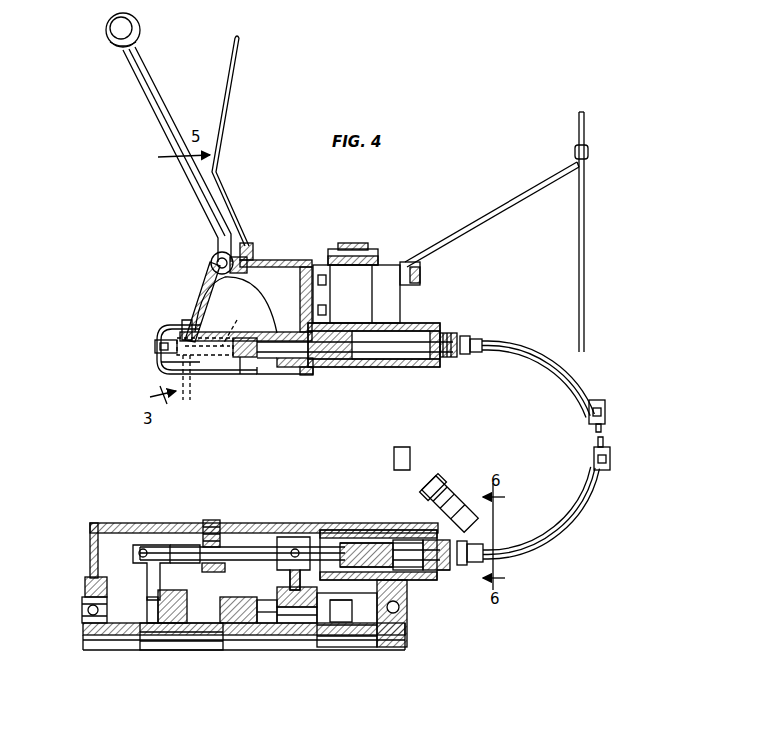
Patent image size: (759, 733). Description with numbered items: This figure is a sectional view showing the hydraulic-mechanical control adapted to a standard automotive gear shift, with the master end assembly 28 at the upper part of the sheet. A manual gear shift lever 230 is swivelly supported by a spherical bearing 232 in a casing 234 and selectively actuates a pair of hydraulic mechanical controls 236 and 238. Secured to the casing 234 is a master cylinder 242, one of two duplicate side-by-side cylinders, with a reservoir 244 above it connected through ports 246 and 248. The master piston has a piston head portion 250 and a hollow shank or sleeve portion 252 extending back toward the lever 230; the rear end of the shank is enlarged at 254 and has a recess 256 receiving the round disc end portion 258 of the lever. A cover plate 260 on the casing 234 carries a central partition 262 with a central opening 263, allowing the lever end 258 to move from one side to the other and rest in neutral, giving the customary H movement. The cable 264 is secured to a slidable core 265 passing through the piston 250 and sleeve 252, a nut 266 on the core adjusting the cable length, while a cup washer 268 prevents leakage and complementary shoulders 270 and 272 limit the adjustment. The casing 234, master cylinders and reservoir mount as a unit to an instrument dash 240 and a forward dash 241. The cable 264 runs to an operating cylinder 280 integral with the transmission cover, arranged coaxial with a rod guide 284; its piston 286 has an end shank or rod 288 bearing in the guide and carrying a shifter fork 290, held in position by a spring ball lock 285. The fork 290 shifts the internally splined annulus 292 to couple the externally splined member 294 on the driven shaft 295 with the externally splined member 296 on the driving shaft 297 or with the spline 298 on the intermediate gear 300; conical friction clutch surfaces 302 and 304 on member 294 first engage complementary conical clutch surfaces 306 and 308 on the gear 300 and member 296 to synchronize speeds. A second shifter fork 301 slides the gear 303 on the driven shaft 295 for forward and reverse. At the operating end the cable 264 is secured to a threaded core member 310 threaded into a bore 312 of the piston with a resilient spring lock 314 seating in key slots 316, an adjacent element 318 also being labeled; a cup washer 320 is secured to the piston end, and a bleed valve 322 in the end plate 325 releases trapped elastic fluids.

The master cylinder 28 is at (405, 335).
The manual gear shift lever 230 is at (170, 140).
The spherical bearing 232 is at (212, 256).
The casing 234 is at (270, 260).
The hydraulic mechanical control 236 is at (592, 386).
The hydraulic mechanical control 238 is at (608, 414).
The instrument dash 240 is at (230, 118).
The forward dash 241 is at (585, 120).
The master cylinder 242 is at (446, 360).
The reservoir 244 is at (390, 296).
The port 246 is at (356, 320).
The port 248 is at (326, 310).
The piston head portion 250 is at (310, 376).
The hollow shank or sleeve portion 252 is at (268, 376).
The enlarged rear end of shank 254 is at (186, 374).
The recess 256 is at (190, 400).
The round disc end portion 258 is at (183, 322).
The cover plate 260 is at (153, 346).
The central partition 262 is at (190, 292).
The central opening 263 is at (238, 324).
The cable 264 is at (412, 355).
The slidable core 265 is at (160, 332).
The nut 266 is at (160, 362).
The cup washer 268 is at (350, 360).
The shoulder 270 is at (246, 375).
The shoulder 272 is at (243, 358).
The operating cylinder 280 is at (352, 540).
The rod guide 284 is at (200, 540).
The spring ball lock 285 is at (208, 520).
The piston 286 is at (418, 542).
The end shank or rod 288 is at (248, 548).
The shifter fork 290 is at (286, 540).
The internally splined annulus 292 is at (312, 548).
The externally splined member 294 is at (296, 625).
The driven shaft 295 is at (215, 635).
The externally splined member 296 is at (340, 630).
The driving shaft 297 is at (395, 648).
The spline 298 is at (268, 625).
The intermediate gear 300 is at (233, 652).
The shifter fork 301 is at (145, 545).
The conical friction clutch surface 302 is at (270, 594).
The gear 303 is at (165, 622).
The conical friction clutch surface 304 is at (325, 602).
The conical clutch surface 306 is at (276, 648).
The conical clutch surface 308 is at (323, 650).
The threaded core member 310 is at (388, 572).
The bore 312 is at (380, 580).
The resilient spring lock 314 is at (398, 546).
The key slot 316 is at (385, 545).
The spring 318 is at (400, 568).
The cup washer 320 is at (412, 568).
The bleed valve 322 is at (458, 498).
The end plate 325 is at (440, 572).